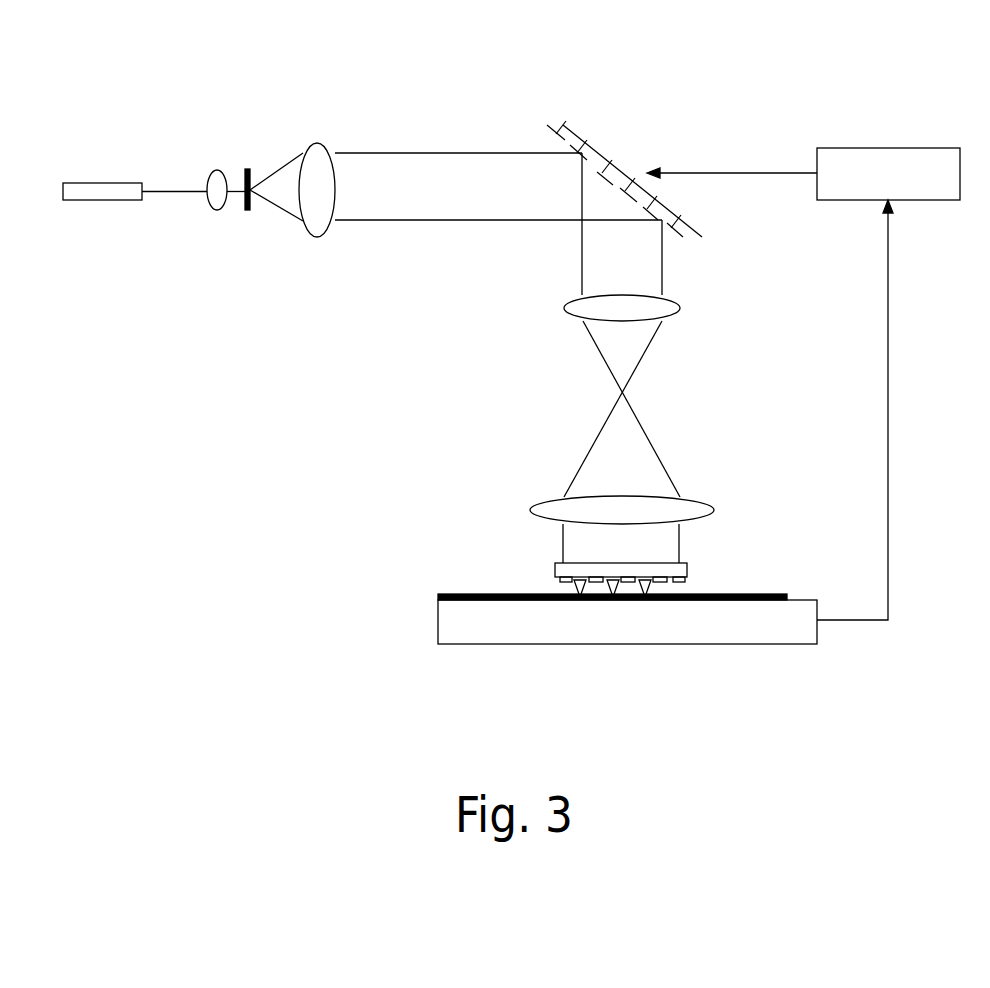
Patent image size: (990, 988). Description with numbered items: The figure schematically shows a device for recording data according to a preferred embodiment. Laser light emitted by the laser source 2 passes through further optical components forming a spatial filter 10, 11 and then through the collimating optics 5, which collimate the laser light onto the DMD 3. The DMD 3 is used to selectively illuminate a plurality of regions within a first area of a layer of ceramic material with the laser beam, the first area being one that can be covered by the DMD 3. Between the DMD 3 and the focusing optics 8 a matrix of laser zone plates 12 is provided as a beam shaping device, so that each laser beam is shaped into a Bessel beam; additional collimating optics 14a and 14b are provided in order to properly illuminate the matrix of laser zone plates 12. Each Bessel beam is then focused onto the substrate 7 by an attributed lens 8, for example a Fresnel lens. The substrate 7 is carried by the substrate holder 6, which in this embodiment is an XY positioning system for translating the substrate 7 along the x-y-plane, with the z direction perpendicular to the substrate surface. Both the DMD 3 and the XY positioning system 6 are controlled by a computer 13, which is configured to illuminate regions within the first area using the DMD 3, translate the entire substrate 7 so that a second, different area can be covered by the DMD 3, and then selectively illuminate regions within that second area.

The laser source 2 is at (100, 183).
The spatial filter 10 is at (218, 167).
The spatial filter 11 is at (248, 166).
The collimating optics 5 is at (315, 142).
The DMD 3 is at (598, 146).
The computer 13 is at (890, 146).
The collimating optics 14a is at (566, 307).
The collimating optics 14b is at (713, 511).
The matrix of laser zone plates 12 is at (555, 568).
The focusing optics 8 is at (558, 586).
The substrate 7 is at (777, 590).
The substrate holder 6 is at (642, 646).